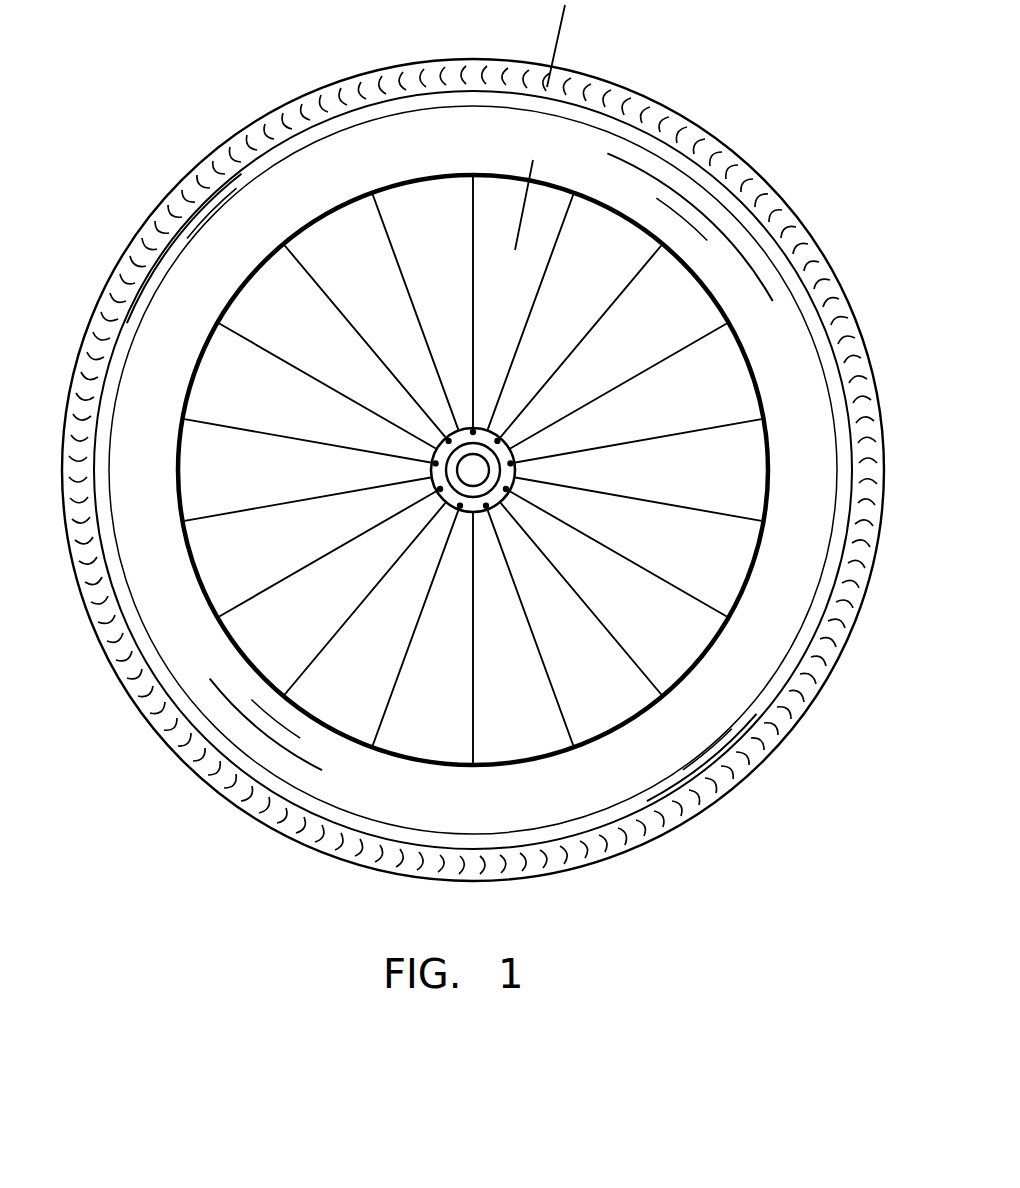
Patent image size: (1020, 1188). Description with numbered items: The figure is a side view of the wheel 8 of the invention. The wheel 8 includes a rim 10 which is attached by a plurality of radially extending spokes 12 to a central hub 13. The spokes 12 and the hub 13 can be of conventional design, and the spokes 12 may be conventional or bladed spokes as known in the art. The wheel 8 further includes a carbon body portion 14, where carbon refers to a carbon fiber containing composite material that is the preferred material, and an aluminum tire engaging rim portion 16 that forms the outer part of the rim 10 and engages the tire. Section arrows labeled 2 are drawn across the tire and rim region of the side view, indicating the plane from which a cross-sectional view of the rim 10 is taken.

The section line 2- 2 is at (508, 32).
The wheel 8 is at (765, 102).
The rim 10 is at (783, 175).
The spokes 12 is at (606, 312).
The central hub 13 is at (512, 463).
The carbon body portion 14 is at (679, 262).
The aluminum tire engaging rim portion 16 is at (819, 279).